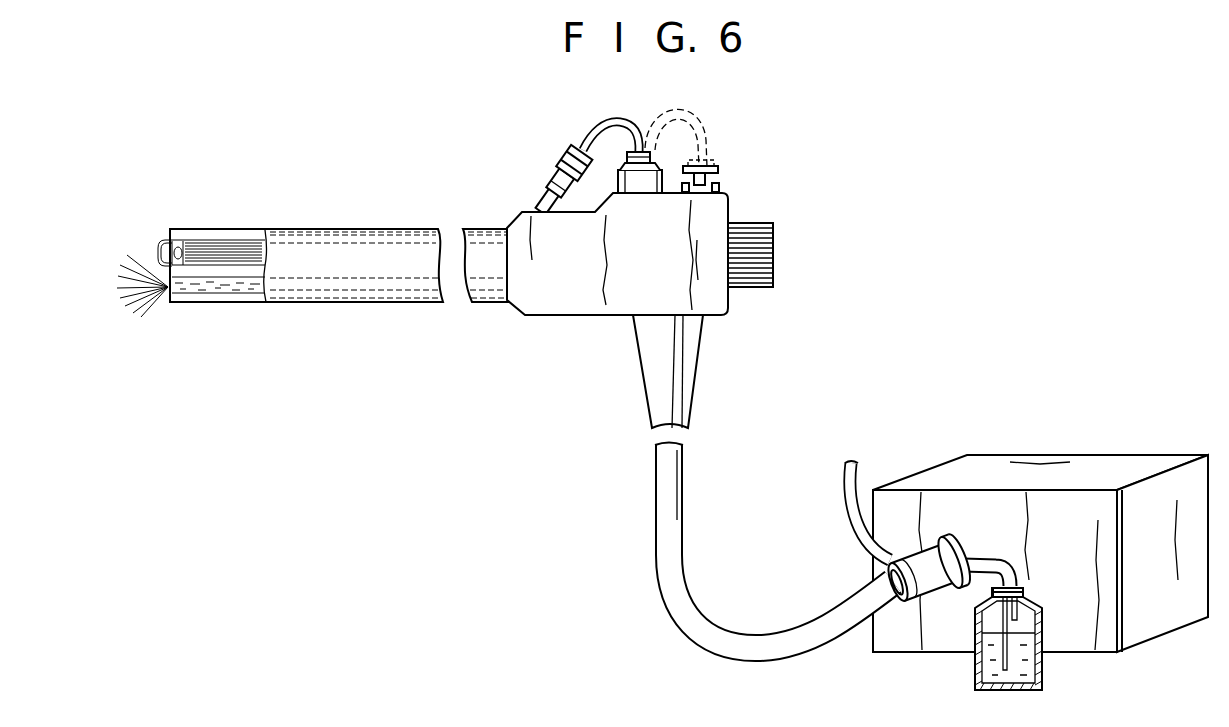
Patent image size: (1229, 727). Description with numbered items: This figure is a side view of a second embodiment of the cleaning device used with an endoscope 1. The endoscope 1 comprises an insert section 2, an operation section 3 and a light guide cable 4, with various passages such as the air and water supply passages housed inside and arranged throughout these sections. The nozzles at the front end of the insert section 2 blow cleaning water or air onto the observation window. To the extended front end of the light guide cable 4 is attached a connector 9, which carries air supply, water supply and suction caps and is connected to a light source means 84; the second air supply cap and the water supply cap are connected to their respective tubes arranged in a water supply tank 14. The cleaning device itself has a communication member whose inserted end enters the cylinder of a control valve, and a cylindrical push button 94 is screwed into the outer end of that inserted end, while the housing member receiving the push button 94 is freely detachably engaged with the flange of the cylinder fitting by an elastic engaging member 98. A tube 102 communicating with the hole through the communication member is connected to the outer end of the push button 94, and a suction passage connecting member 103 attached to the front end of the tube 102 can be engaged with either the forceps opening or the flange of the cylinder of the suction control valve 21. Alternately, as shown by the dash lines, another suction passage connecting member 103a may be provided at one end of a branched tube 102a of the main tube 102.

The endoscope 1 is at (450, 310).
The insert section 2 is at (353, 292).
The operation section 3 is at (563, 304).
The light guide cable 4 is at (662, 558).
The connector 9 is at (937, 597).
The water supply tank 14 is at (975, 670).
The suction control valve 21 is at (718, 186).
The light source means 84 is at (1055, 463).
The push button 94 is at (643, 153).
The elastic engaging member 98 is at (647, 193).
The tube 102 is at (587, 138).
The branched tube 102a is at (703, 138).
The suction passage connecting member 103 is at (553, 155).
The suction passage connecting member 103a is at (717, 160).